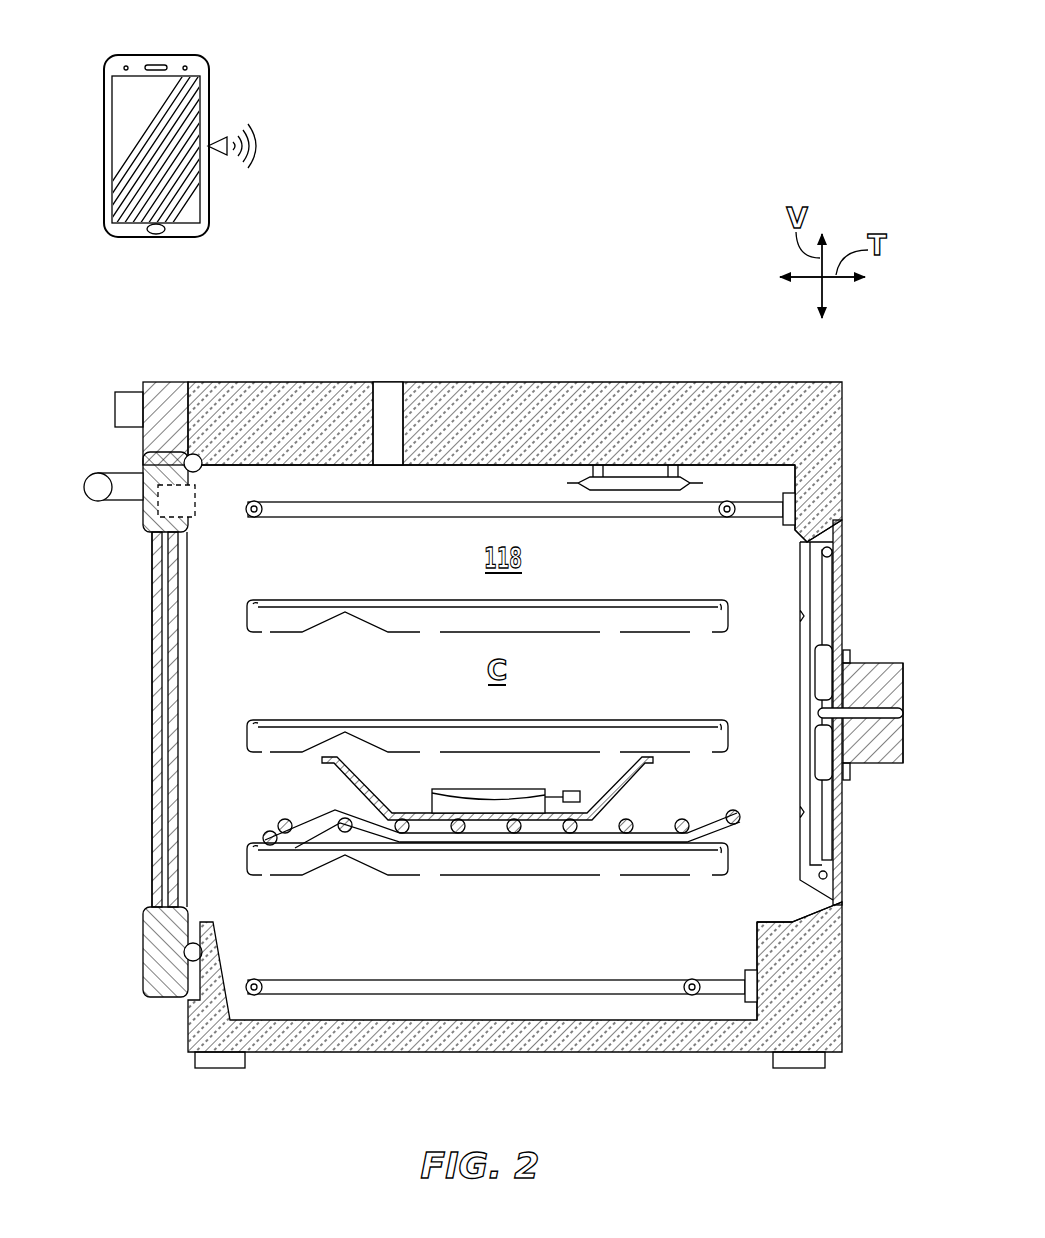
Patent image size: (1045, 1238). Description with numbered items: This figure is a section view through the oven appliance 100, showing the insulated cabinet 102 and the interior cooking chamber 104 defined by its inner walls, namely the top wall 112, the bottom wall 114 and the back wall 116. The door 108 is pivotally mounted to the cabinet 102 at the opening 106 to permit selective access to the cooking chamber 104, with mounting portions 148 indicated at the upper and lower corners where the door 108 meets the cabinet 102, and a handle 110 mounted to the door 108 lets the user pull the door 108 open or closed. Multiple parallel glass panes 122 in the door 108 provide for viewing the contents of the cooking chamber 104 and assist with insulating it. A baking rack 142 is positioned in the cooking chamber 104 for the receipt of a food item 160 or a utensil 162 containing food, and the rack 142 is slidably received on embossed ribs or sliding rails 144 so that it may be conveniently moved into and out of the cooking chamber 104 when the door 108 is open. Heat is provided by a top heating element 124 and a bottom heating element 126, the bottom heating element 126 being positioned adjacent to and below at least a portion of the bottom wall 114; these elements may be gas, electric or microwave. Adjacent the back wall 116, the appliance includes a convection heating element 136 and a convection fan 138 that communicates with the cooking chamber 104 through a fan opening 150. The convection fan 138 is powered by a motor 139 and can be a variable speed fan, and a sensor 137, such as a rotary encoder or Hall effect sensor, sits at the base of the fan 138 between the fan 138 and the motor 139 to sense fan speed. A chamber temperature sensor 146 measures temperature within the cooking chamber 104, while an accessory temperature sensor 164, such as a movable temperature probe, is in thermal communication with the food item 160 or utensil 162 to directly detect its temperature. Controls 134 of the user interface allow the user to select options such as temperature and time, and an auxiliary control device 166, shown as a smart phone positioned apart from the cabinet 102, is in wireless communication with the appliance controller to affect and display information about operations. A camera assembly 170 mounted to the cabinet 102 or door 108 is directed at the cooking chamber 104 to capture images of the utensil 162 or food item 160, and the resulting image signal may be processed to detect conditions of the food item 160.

The oven appliance 100 is at (587, 230).
The insulated cabinet 102 is at (350, 405).
The cooking chamber 104 is at (778, 589).
The opening 106 is at (180, 719).
The door 108 is at (145, 503).
The handle 110 is at (98, 478).
The top wall 112 is at (497, 470).
The bottom wall 114 is at (781, 916).
The back wall 116 is at (791, 486).
The glass panes 122 is at (158, 675).
The top heating element 124 is at (580, 514).
The bottom heating element 126 is at (350, 992).
The controls 134 is at (125, 410).
The convection heating element 136 is at (828, 818).
The sensor 137 is at (850, 690).
The convection fan 138 is at (826, 650).
The motor 139 is at (906, 752).
The baking rack 142 is at (706, 822).
The sliding rails 144 is at (618, 733).
The chamber temperature sensor 146 is at (628, 484).
The hinge blocks 148 is at (192, 378).
The fan opening 150 is at (795, 622).
The food item 160 is at (465, 789).
The utensil 162 is at (354, 778).
The accessory temperature sensor 164 is at (570, 790).
The auxiliary control device 166 is at (150, 238).
The camera assembly 170 is at (200, 517).